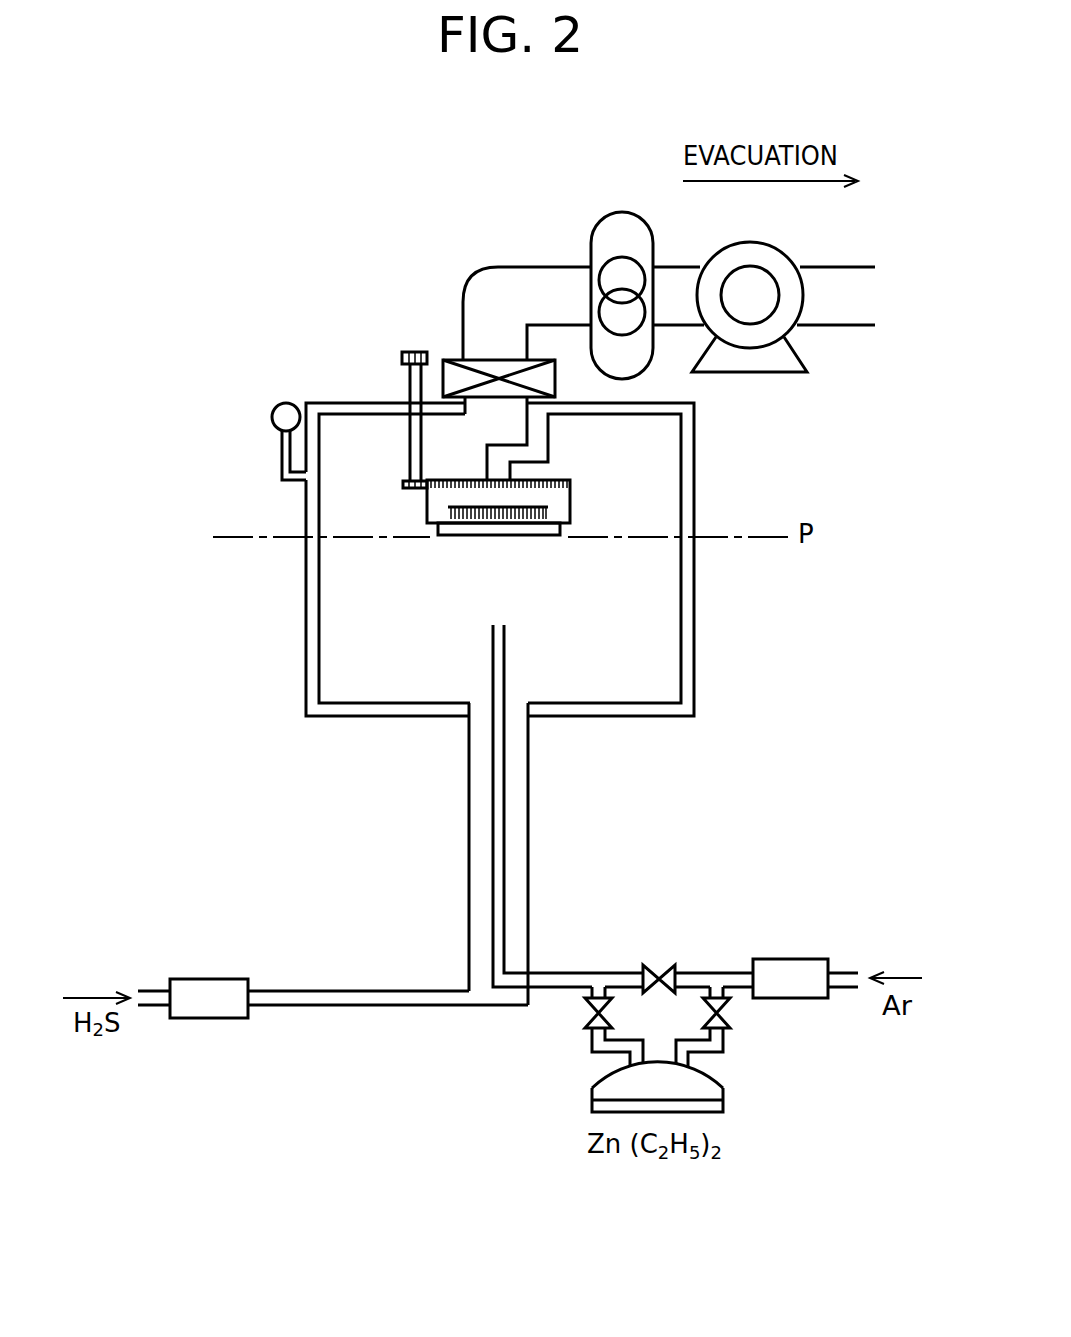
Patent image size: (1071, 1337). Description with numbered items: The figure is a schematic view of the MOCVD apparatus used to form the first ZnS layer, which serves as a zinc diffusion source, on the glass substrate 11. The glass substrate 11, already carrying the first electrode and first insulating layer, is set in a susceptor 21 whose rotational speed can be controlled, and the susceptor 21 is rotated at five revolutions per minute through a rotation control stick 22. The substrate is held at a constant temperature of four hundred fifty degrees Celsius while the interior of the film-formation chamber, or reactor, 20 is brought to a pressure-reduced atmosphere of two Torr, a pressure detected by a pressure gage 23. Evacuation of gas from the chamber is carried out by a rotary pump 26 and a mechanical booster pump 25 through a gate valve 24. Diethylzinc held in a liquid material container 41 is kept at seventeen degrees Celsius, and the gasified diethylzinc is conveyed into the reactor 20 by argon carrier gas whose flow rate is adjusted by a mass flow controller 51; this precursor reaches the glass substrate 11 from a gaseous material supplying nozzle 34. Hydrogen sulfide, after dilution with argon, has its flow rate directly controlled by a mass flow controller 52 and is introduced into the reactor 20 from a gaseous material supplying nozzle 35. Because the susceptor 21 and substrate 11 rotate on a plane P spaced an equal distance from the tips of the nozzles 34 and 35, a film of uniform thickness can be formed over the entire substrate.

The glass substrate 11 is at (447, 538).
The film-formation chamber 20 is at (696, 490).
The susceptor 21 is at (571, 497).
The rotation control stick 22 is at (407, 352).
The pressure gage 23 is at (272, 418).
The gate valve 24 is at (455, 360).
The mechanical booster pump 25 is at (596, 225).
The rotary pump 26 is at (752, 372).
The gaseous material supplying nozzle 34 is at (492, 659).
The gaseous material supplying nozzle 35 is at (531, 756).
The liquid material container 41 is at (718, 1078).
The mass flow controller 51 is at (792, 959).
The mass flow controller 52 is at (200, 979).